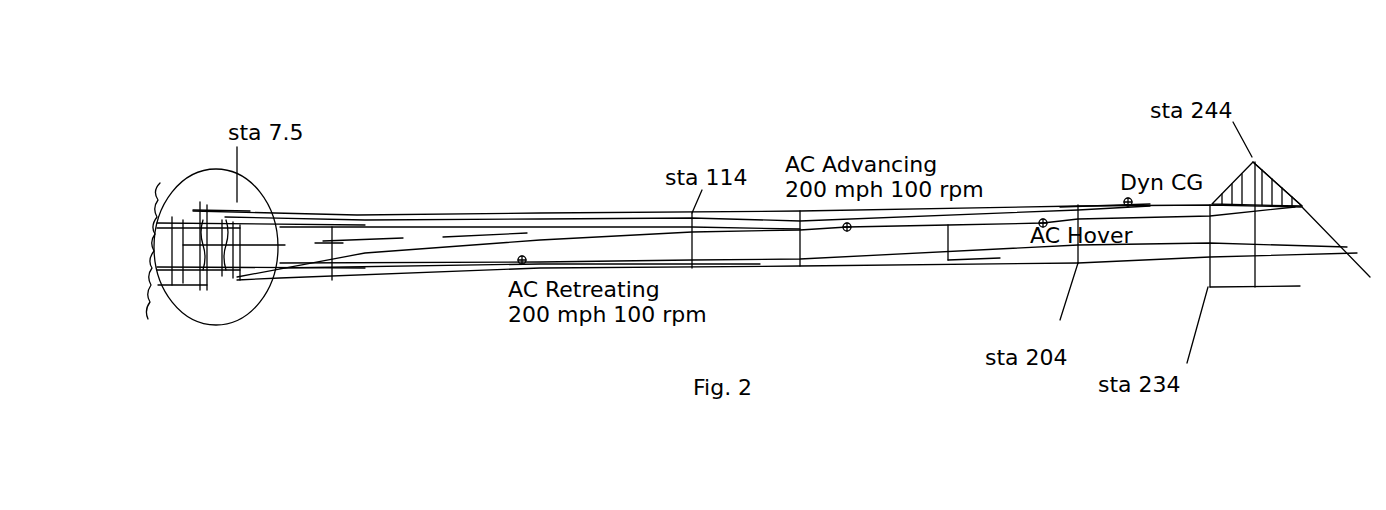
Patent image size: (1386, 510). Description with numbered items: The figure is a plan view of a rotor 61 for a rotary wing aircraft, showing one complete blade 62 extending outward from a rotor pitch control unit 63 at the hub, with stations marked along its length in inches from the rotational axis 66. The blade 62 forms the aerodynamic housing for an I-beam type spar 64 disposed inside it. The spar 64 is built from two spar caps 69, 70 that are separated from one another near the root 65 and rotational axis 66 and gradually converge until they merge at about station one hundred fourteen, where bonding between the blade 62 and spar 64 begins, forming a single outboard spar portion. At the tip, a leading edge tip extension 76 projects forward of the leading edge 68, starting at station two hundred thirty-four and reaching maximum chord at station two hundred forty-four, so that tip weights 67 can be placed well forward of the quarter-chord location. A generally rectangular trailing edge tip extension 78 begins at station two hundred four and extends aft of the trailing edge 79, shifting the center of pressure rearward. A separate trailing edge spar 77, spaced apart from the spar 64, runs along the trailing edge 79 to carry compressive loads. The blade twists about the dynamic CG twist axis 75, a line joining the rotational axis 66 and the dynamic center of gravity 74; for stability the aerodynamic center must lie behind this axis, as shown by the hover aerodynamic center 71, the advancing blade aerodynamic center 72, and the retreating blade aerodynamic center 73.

The rotor 61 is at (763, 305).
The blade 62 is at (637, 253).
The rotor pitch control unit 63 is at (215, 207).
The spar 64 is at (317, 262).
The root 65 is at (240, 233).
The rotational axis 66 is at (205, 252).
The tip weights 67 is at (1265, 173).
The leading edge 68 is at (483, 217).
The spar cap 69 is at (383, 260).
The spar cap 70 is at (380, 222).
The aerodynamic center at zero airspeed 71 is at (1041, 219).
The advancing blade aerodynamic center 72 is at (849, 231).
The retreating blade aerodynamic center 73 is at (519, 263).
The dynamic center of gravity 74 is at (1125, 199).
The dynamic CG twist axis 75 is at (1076, 205).
The leading edge tip extension 76 is at (1287, 190).
The trailing edge spar 77 is at (1048, 256).
The trailing edge tip extension 78 is at (1233, 288).
The trailing edge 79 is at (970, 263).